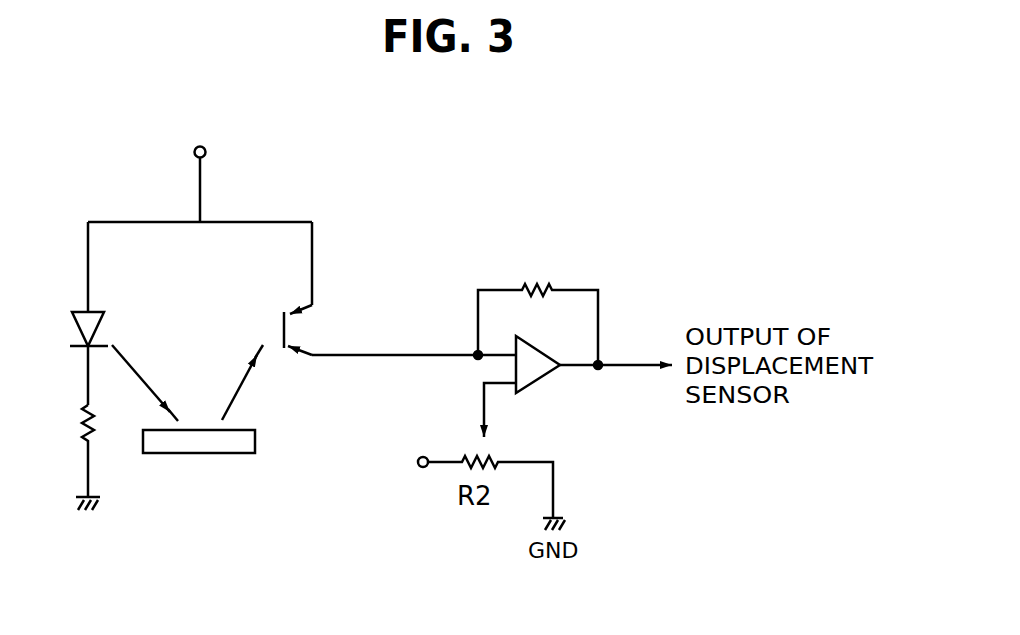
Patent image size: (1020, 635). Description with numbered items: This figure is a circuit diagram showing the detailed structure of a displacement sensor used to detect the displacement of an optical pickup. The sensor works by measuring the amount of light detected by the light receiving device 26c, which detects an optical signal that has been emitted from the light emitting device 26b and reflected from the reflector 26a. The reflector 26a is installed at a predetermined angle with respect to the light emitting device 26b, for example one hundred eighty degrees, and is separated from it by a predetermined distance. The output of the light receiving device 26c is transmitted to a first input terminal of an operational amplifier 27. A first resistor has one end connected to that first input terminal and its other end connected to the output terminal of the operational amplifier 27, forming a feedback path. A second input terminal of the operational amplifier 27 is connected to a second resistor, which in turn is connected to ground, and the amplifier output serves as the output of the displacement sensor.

The reflector 26a is at (210, 453).
The light emitting device 26b is at (74, 312).
The light receiving device 26c is at (306, 332).
The operational amplifier 27 is at (530, 383).